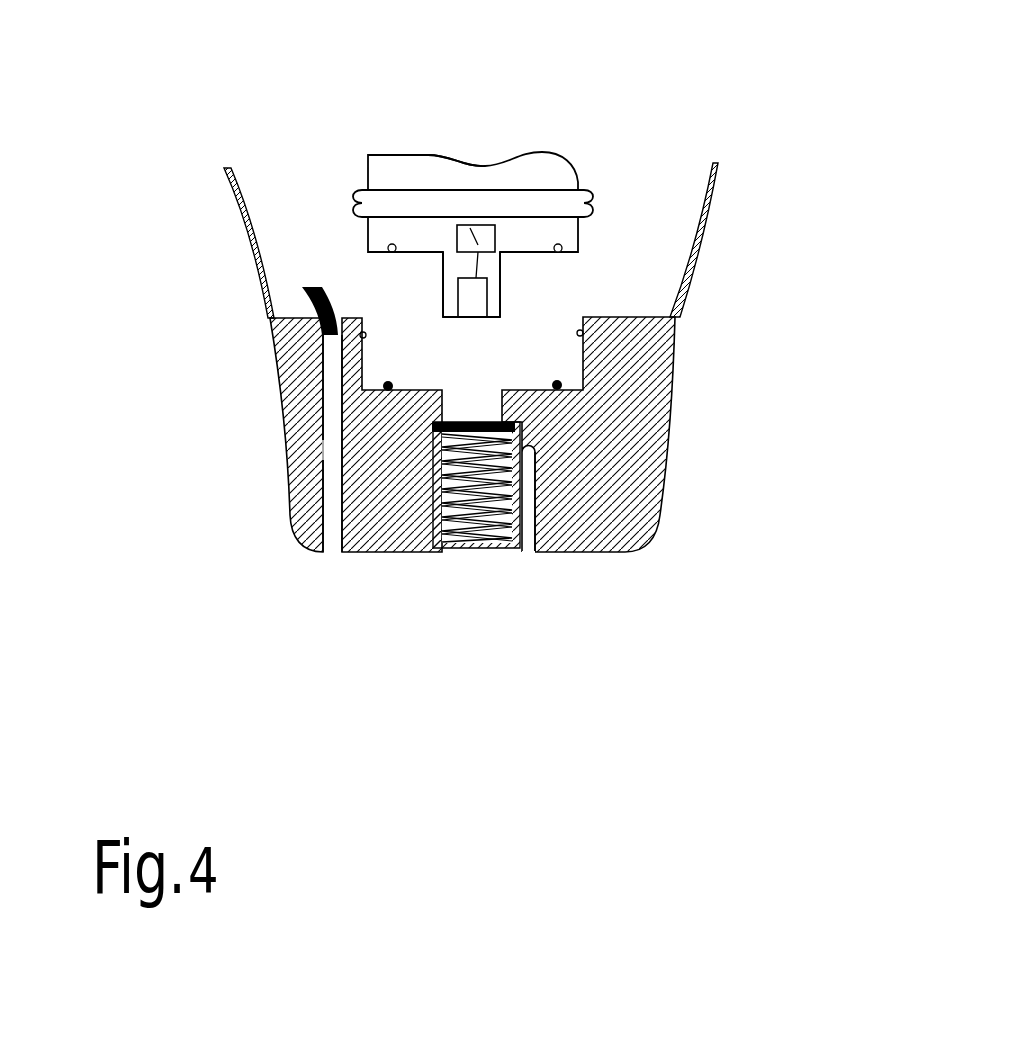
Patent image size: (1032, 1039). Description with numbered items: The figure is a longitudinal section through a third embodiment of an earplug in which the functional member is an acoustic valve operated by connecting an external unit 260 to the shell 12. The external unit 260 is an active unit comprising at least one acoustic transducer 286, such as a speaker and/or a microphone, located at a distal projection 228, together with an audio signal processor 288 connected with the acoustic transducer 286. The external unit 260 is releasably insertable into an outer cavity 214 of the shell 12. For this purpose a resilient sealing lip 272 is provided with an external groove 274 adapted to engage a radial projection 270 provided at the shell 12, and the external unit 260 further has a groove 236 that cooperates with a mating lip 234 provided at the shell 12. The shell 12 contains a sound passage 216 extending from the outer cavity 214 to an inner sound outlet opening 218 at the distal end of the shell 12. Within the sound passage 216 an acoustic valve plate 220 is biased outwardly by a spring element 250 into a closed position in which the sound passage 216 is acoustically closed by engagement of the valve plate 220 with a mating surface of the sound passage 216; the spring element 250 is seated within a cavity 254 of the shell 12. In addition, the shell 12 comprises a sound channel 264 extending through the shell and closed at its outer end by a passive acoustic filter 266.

The shell 12 is at (643, 390).
The outer cavity 214 is at (560, 297).
The sound passage 216 is at (525, 458).
The inner sound outlet opening 218 is at (528, 552).
The acoustic valve plate 220 is at (472, 421).
The distal projection 228 is at (441, 278).
The mating lip 234 is at (460, 398).
The groove 236 is at (368, 250).
The spring element 250 is at (463, 507).
The cavity 254 is at (498, 525).
The external unit 260 is at (430, 188).
The sound channel 264 is at (332, 449).
The passive acoustic filter 266 is at (302, 287).
The radial projection 270 is at (363, 337).
The resilient sealing lip 272 is at (567, 160).
The external groove 274 is at (593, 200).
The acoustic transducer 286 is at (468, 302).
The audio signal processor 288 is at (458, 188).